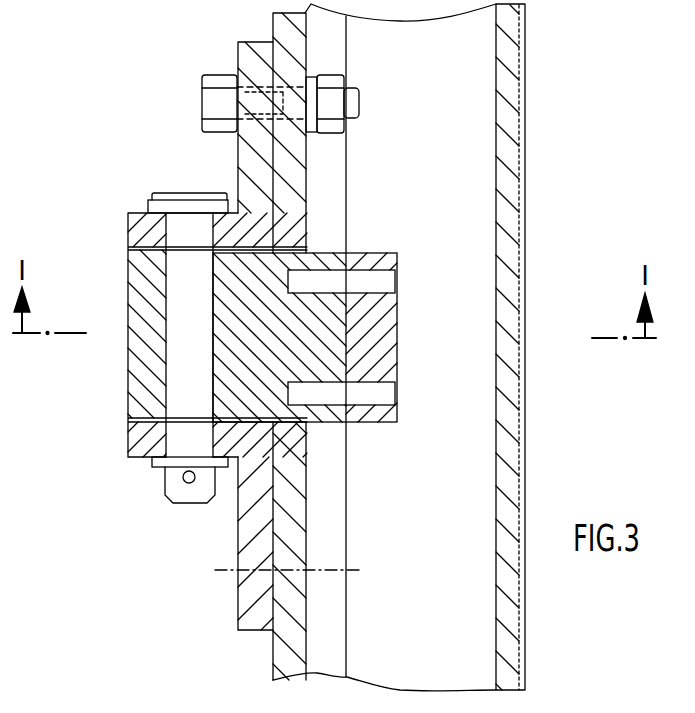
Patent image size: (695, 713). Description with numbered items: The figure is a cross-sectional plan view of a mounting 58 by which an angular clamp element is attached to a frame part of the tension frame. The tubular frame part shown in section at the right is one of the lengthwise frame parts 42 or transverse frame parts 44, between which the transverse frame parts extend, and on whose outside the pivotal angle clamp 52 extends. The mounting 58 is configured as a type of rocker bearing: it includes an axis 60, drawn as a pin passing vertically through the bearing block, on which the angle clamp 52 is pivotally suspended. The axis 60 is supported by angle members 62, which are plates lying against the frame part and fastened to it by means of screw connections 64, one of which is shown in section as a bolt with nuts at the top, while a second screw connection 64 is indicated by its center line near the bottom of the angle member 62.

The lengthwise frame part 42 is at (570, 347).
The transverse frame part 44 is at (544, 121).
The angle clamp 52 is at (293, 486).
The mounting 58 is at (133, 378).
The axis 60 is at (173, 193).
The angle member 62 is at (238, 58).
The screw connection 64 is at (202, 102).